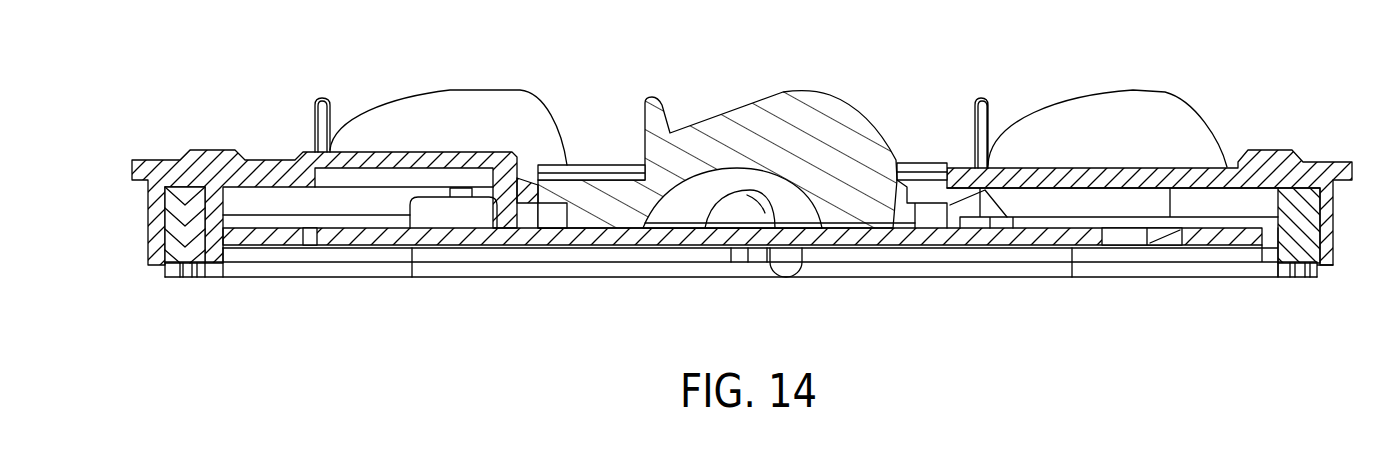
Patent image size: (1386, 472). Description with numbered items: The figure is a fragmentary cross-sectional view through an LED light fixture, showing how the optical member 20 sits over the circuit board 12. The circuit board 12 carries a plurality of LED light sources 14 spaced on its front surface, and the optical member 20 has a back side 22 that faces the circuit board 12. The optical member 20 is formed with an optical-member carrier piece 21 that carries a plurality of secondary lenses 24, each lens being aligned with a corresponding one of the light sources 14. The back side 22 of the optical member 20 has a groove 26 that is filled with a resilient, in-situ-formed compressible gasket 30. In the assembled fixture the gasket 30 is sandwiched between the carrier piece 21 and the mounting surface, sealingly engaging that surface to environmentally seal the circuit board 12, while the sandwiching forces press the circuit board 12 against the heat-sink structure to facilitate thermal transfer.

The circuit board 12 is at (580, 237).
The LED light sources 14 is at (730, 223).
The optical member 20 is at (1263, 180).
The optical-member carrier piece 21 is at (225, 180).
The back side 22 is at (278, 188).
The secondary lenses 24 is at (503, 110).
The groove 26 is at (177, 190).
The gasket 30 is at (1300, 227).